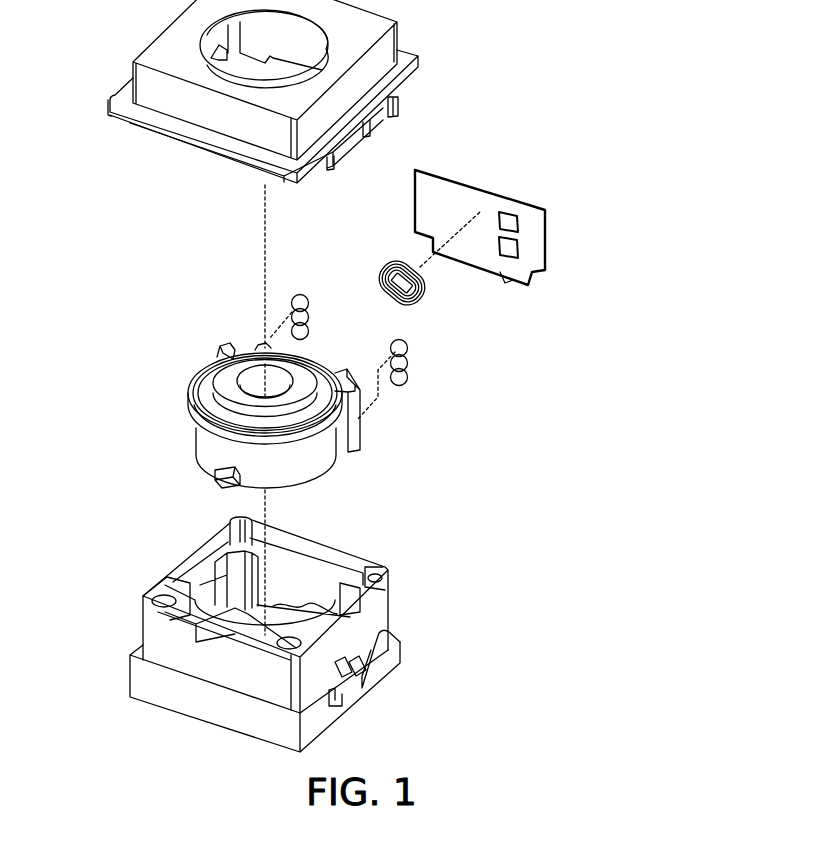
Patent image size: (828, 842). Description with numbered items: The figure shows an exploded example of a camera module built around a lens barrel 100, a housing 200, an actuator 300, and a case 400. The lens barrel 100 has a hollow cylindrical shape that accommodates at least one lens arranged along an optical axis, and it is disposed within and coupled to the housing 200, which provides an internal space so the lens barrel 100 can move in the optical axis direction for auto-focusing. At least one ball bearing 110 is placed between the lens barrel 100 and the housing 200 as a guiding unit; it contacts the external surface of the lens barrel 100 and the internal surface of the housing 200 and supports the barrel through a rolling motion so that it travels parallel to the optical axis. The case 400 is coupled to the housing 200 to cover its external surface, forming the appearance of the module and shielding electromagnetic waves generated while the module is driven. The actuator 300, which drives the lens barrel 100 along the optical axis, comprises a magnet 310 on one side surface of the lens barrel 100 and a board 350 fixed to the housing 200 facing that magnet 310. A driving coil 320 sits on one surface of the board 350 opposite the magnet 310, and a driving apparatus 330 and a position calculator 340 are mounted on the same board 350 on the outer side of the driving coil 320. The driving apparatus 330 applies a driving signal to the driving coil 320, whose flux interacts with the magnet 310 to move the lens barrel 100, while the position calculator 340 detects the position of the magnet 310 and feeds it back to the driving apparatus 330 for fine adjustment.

The lens barrel 100 is at (197, 430).
The ball bearing 110 is at (408, 377).
The housing 200 is at (200, 713).
The actuator 300 is at (681, 267).
The magnet 310 is at (340, 365).
The driving coil 320 is at (433, 293).
The driving apparatus 330 is at (547, 243).
The position calculator 340 is at (531, 274).
The board 350 is at (503, 280).
The case 400 is at (131, 88).